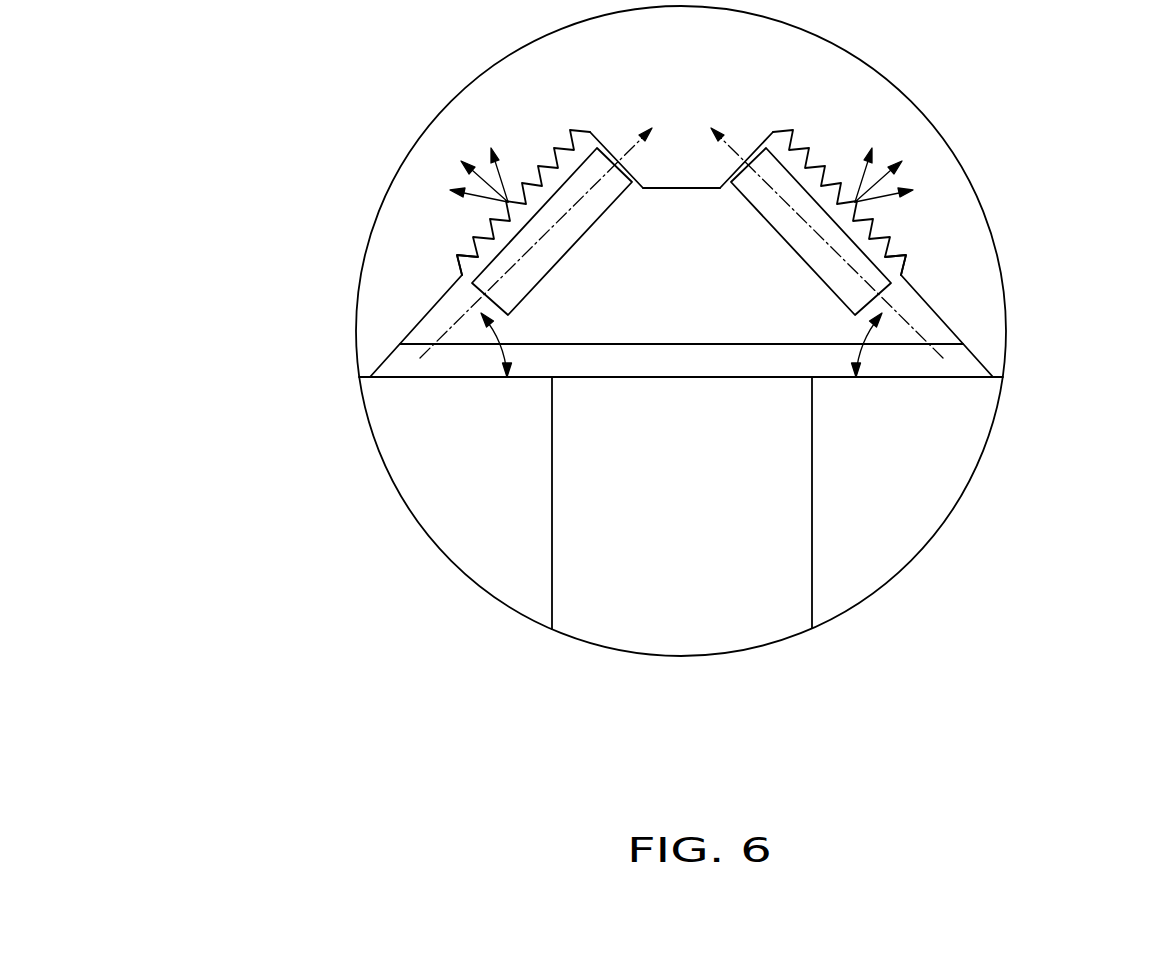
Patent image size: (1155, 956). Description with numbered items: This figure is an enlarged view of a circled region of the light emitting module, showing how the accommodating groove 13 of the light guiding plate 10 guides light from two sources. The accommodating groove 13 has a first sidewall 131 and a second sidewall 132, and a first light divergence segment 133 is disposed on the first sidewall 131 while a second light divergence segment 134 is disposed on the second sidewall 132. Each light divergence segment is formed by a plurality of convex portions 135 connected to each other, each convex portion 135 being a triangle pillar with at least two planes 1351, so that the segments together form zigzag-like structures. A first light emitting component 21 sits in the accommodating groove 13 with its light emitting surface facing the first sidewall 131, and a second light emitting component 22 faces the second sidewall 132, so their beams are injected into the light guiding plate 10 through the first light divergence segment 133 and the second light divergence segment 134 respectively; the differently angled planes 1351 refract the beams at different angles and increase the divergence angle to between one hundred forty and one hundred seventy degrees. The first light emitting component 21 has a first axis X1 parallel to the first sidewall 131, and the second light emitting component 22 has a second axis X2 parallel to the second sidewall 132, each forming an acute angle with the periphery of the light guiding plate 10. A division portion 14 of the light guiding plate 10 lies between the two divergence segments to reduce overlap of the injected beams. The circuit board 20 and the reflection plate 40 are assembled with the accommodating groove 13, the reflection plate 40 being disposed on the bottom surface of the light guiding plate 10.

The light guiding plate 10 is at (423, 147).
The accommodating groove 13 is at (669, 239).
The first sidewall 131 is at (403, 337).
The second sidewall 132 is at (933, 307).
The first light divergence segment 133 is at (570, 127).
The second light divergence segment 134 is at (791, 127).
The convex portion 135 is at (548, 150).
The plane 1351 is at (472, 243).
The division portion 14 is at (676, 180).
The circuit board 20 is at (752, 516).
The first light emitting component 21 is at (548, 257).
The second light emitting component 22 is at (815, 257).
The reflection plate 40 is at (418, 362).
The first axis X1 is at (544, 225).
The second axis X2 is at (820, 225).